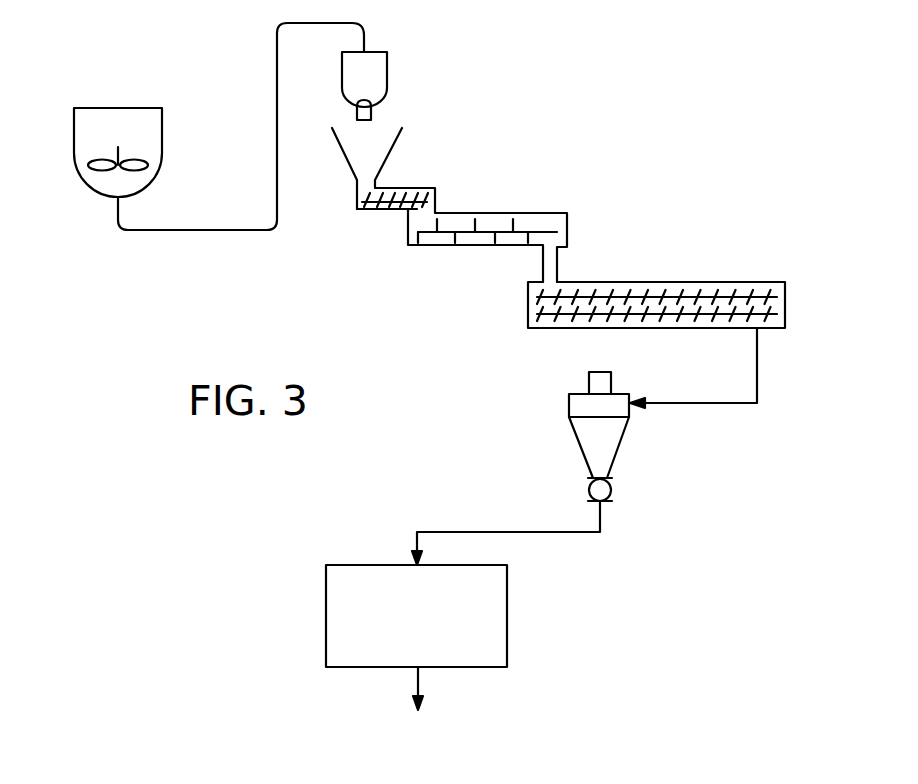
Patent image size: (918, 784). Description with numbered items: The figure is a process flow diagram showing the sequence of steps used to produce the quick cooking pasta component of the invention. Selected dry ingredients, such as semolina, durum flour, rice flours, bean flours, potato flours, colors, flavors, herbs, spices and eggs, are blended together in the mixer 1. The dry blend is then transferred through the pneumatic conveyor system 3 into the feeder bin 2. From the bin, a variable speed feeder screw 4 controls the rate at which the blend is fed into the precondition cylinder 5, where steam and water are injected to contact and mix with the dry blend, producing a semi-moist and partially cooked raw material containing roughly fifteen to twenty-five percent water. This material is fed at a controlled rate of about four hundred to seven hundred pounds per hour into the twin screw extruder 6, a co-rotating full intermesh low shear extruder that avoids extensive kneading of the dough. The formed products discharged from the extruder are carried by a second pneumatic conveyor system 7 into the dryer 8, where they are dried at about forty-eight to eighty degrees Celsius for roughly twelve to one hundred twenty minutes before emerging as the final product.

The mixer 1 is at (138, 107).
The feeder bin 2 is at (395, 141).
The pneumatic conveyor system 3 is at (387, 72).
The variable speed feeder screw 4 is at (390, 210).
The precondition cylinder 5 is at (470, 245).
The twin screw extruder 6 is at (658, 282).
The pneumatic conveyor system 7 is at (618, 448).
The dryer 8 is at (330, 623).